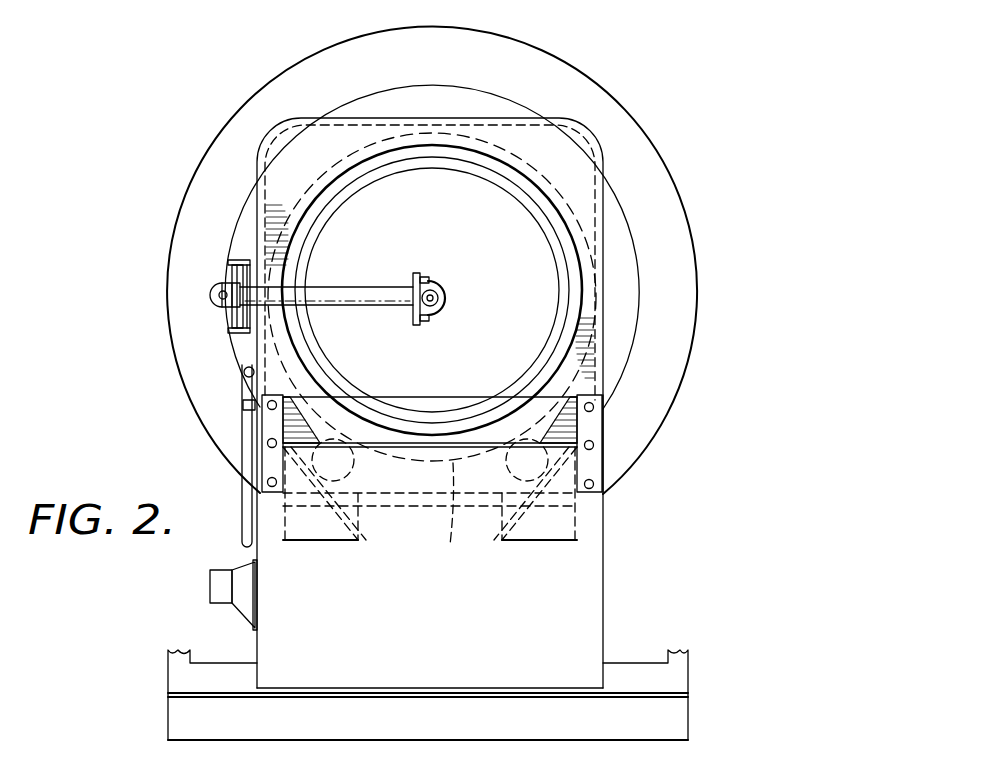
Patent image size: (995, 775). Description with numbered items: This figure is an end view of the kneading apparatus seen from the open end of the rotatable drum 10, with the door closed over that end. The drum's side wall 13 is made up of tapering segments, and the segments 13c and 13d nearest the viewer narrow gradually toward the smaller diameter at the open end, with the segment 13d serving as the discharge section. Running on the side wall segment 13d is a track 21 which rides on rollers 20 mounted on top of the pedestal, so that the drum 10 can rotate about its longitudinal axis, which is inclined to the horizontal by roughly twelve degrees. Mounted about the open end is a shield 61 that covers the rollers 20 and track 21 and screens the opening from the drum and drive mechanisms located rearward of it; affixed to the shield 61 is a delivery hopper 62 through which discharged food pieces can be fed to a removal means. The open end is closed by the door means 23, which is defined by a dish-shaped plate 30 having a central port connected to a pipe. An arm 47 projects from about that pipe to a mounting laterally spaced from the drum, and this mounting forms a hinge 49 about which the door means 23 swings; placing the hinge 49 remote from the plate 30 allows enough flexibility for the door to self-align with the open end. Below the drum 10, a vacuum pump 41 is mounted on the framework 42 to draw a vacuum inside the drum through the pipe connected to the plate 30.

The rotatable drum 10 is at (163, 188).
The side wall 13 is at (584, 74).
The side wall segment 13c is at (664, 366).
The side wall segment 13d is at (622, 295).
The shield 61 is at (596, 152).
The door means 23 is at (524, 259).
The dish-shaped plate 30 is at (462, 248).
The hinge 49 is at (228, 281).
The arm 47 is at (278, 303).
The rollers 20 is at (300, 462).
The track 21 is at (454, 542).
The delivery hopper 62 is at (560, 530).
The vacuum pump 41 is at (210, 593).
The framework 42 is at (668, 717).